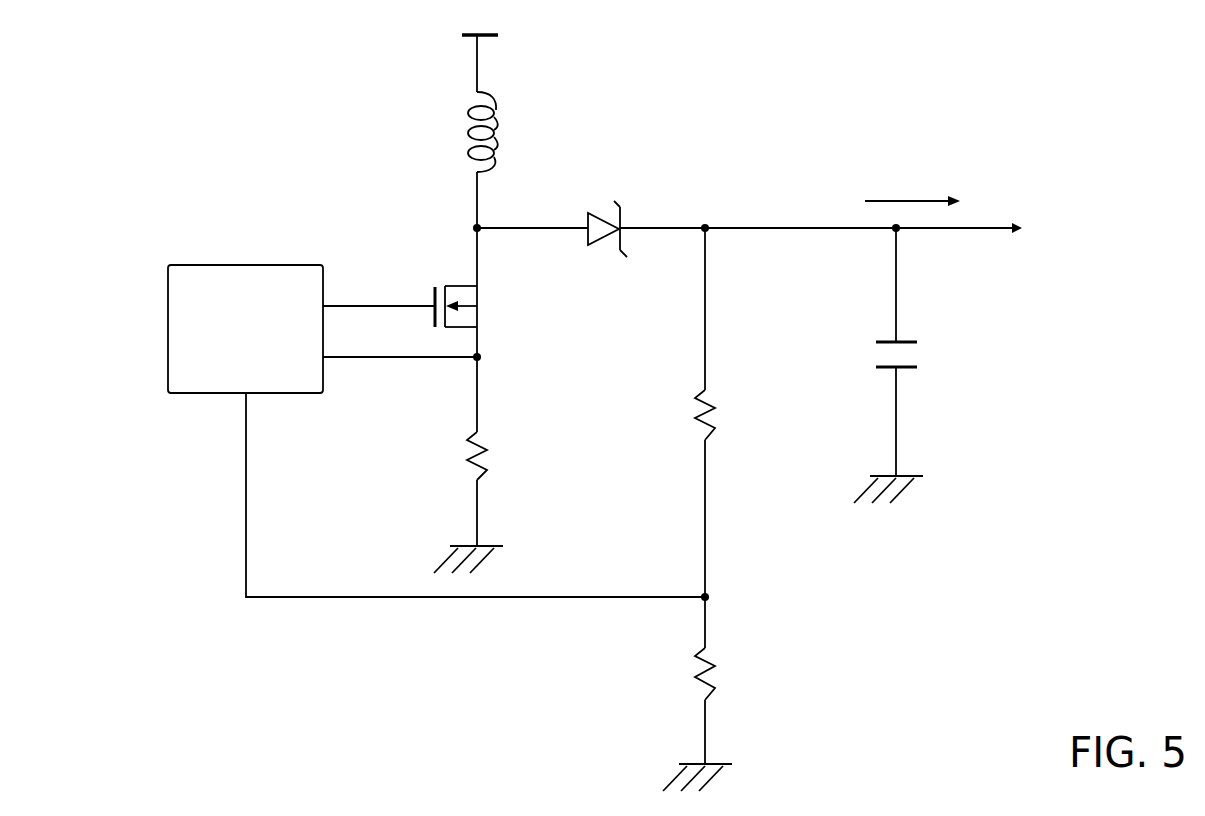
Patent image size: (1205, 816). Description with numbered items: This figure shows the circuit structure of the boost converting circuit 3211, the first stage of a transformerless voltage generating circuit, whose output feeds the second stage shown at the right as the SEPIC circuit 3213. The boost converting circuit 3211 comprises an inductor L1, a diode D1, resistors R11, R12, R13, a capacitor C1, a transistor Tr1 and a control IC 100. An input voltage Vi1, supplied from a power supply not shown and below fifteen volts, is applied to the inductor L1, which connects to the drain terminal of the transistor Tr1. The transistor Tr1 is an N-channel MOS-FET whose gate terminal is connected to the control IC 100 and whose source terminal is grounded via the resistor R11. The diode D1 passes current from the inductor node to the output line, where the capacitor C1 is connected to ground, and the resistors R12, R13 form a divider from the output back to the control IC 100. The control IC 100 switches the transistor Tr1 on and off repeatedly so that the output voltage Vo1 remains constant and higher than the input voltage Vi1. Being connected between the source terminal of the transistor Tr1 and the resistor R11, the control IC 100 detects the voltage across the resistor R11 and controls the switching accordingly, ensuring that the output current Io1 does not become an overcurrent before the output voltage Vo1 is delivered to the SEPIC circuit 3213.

The control IC 100 is at (224, 265).
The boost converting circuit 3211 is at (770, 68).
The SEPIC circuit 3213 is at (1065, 247).
The inductor L1 is at (486, 100).
The transistor Tr1 is at (437, 288).
The diode D1 is at (600, 240).
The resistor R11 is at (482, 435).
The resistor R12 is at (714, 415).
The resistor R13 is at (716, 672).
The capacitor C1 is at (908, 370).
The input voltage Vi1 is at (480, 50).
The output current Io1 is at (912, 190).
The output voltage Vo1 is at (1041, 186).